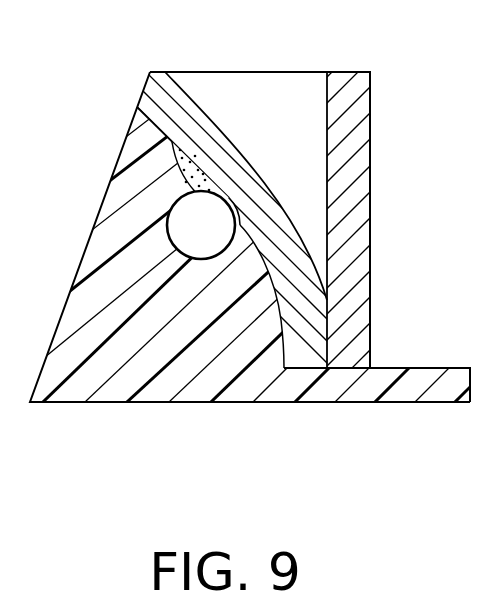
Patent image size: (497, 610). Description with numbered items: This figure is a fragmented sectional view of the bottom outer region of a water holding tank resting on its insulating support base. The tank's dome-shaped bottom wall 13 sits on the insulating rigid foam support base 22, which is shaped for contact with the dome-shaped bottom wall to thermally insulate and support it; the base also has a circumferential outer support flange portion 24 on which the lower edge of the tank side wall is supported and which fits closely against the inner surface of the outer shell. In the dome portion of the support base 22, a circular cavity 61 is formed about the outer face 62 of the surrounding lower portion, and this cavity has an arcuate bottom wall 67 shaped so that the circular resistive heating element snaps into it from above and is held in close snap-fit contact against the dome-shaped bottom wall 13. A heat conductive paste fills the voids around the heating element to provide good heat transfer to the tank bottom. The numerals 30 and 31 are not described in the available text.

The dome-shaped bottom wall 13 is at (228, 163).
The insulating rigid foam support base 22 is at (100, 324).
The circumferential outer support flange portion 24 is at (383, 378).
The cavity 30 is at (273, 158).
The side wall 31 is at (358, 150).
The circular cavity 61 is at (168, 198).
The outer face 62 is at (166, 134).
The arcuate bottom wall 67 is at (166, 233).